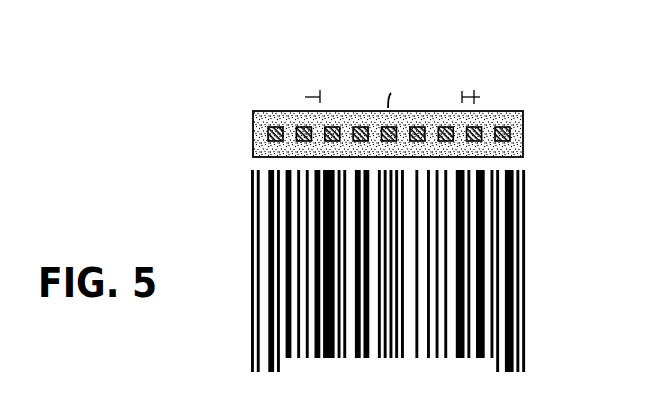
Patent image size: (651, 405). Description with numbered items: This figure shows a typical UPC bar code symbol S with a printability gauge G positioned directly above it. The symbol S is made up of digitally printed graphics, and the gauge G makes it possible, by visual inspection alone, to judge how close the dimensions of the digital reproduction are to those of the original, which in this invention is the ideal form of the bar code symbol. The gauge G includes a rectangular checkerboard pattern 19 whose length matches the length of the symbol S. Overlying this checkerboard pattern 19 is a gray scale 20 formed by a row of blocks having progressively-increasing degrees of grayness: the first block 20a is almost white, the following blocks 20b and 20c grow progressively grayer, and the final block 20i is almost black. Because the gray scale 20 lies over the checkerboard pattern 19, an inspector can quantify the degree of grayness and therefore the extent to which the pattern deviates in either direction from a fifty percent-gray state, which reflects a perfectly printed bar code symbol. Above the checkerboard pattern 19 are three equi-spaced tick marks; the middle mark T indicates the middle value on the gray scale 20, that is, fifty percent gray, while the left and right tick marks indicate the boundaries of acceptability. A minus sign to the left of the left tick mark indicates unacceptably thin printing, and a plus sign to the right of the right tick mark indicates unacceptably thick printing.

The checkerboard pattern 19 is at (438, 115).
The gray scale 20 is at (258, 94).
The first block 20a is at (275, 126).
The second block 20b is at (312, 75).
The third block 20c is at (332, 126).
The final block 20i is at (503, 126).
The middle tick mark T is at (393, 91).
The printability gauge G is at (525, 130).
The bar code symbol S is at (526, 278).